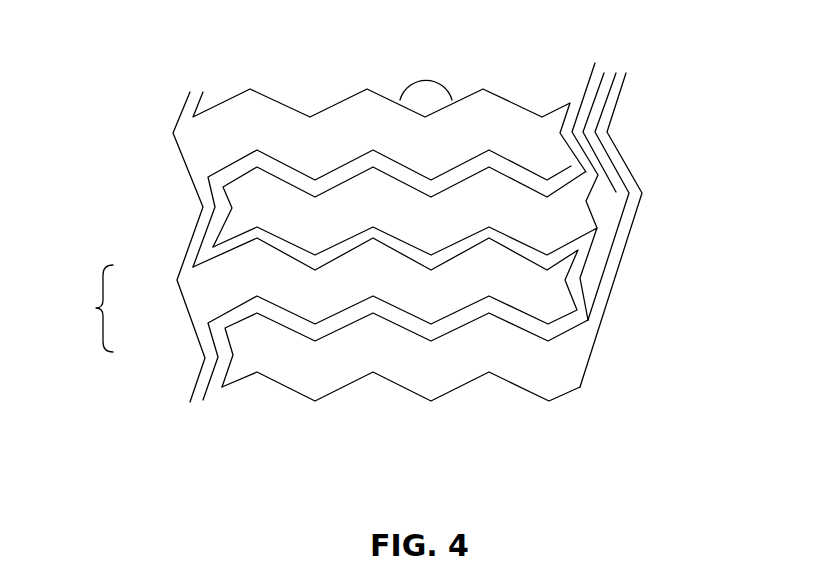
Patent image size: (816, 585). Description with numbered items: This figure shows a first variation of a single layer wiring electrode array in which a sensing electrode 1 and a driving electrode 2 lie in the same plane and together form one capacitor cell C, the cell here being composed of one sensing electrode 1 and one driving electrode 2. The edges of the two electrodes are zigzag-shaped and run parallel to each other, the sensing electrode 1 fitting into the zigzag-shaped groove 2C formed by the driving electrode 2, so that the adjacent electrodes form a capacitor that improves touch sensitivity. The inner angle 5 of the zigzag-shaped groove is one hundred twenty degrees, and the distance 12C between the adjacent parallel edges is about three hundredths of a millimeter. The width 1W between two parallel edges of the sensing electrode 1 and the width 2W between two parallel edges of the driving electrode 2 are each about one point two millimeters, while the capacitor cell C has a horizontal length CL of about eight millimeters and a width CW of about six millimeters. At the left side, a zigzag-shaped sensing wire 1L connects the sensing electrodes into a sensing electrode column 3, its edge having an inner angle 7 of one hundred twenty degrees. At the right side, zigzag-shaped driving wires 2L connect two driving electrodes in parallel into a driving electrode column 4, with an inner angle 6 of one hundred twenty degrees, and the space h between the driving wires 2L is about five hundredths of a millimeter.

The sensing electrode 1 is at (255, 278).
The driving electrode 2 is at (396, 276).
The sensing electrode column 3 is at (538, 93).
The driving electrode column 4 is at (500, 398).
The inner angle of zigzag-shaped groove 5 is at (425, 82).
The inner angle of zigzag-shaped edge of driving wire 6 is at (624, 113).
The inner angle of zigzag-shaped edge of sensing wire 7 is at (194, 177).
The sensing wire 1L is at (200, 386).
The driving wire 2L is at (607, 292).
The width of sensing electrode 1W is at (363, 200).
The width of driving electrode 2W is at (435, 292).
The distance between adjacent edges 12C is at (488, 213).
The zigzag-shaped groove 2C is at (585, 260).
The capacitor cell C is at (100, 308).
The width of capacitor cell CW is at (720, 255).
The horizontal length of capacitor cell CL is at (620, 508).
The space between driving wires h is at (558, 72).